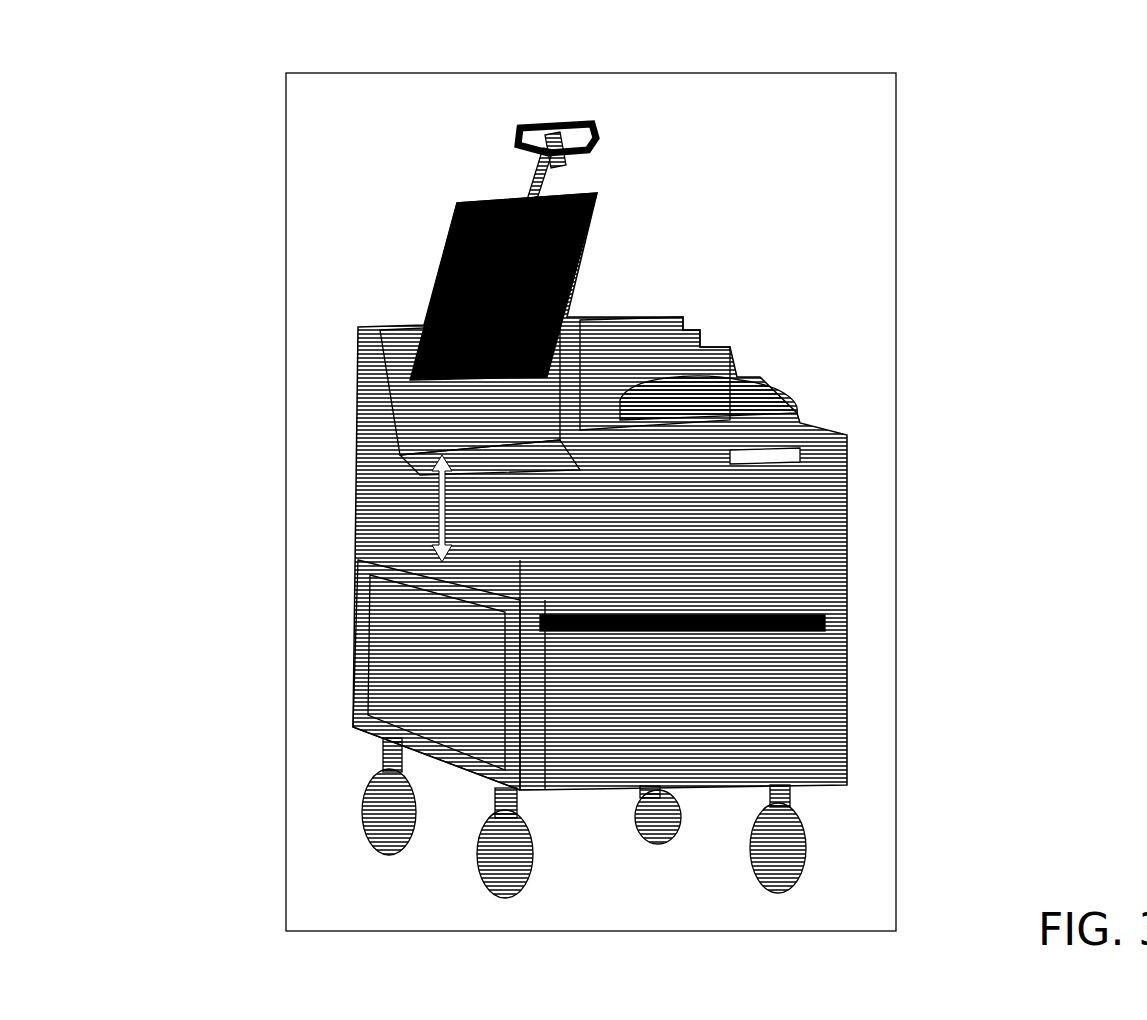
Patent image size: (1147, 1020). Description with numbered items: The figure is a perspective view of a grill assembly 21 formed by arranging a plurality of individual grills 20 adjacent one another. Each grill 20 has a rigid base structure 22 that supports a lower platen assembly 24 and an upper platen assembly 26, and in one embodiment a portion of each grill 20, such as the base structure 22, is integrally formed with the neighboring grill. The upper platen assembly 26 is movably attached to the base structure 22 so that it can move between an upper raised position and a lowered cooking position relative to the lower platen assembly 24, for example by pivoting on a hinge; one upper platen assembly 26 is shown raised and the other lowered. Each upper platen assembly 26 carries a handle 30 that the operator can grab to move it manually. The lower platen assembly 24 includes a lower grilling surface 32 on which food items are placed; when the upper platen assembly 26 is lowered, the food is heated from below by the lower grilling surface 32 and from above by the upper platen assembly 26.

The grill 20 is at (393, 288).
The grill assembly 21 is at (918, 188).
The base structure 22 is at (422, 635).
The lower platen assembly 24 is at (525, 490).
The upper platen assembly 26 is at (445, 173).
The handle 30 is at (549, 122).
The lower grilling surface 32 is at (440, 450).